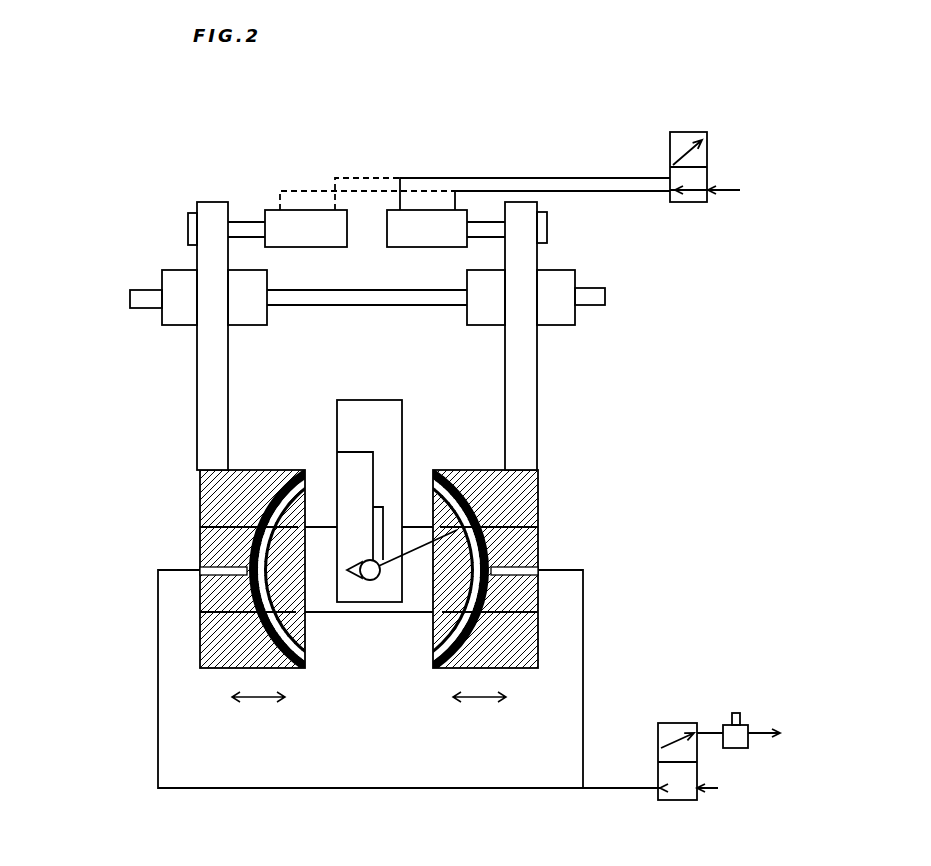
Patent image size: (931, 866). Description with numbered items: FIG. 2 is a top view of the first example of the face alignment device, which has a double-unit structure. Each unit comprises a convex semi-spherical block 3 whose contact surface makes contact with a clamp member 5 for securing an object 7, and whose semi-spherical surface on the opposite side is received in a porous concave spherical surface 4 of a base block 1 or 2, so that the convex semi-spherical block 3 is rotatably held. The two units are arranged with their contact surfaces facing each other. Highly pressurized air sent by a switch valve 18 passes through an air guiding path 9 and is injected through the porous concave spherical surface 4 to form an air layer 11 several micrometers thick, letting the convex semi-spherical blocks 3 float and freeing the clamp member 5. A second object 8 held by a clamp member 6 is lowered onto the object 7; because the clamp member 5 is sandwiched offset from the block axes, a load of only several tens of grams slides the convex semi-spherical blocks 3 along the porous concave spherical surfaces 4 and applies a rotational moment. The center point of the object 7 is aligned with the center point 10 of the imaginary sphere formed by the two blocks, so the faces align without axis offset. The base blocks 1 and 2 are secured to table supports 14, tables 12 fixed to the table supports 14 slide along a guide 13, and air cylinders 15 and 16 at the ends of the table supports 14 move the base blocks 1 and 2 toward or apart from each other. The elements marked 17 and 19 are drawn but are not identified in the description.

The base frame 1 is at (217, 672).
The holder block 2 is at (505, 670).
The lower clamp member 3 is at (200, 610).
The upper clamp member 4 is at (200, 523).
The central support pedestal 5 is at (337, 633).
The plunger 6 is at (337, 478).
The ball 7 is at (373, 582).
The conical seat 8 is at (366, 582).
The slot 9 is at (200, 568).
The spherical bearing surface 10 is at (493, 468).
The arcuate liner 11 is at (267, 472).
The lower shaft bearing 12 is at (163, 325).
The shaft end 13 is at (132, 307).
The vertical column 14 is at (197, 343).
The left upper bearing cap 15 is at (188, 235).
The right upper bearing cap 16 is at (547, 228).
The control valve 17 is at (697, 202).
The supply valve 18 is at (676, 723).
The pressure regulator 19 is at (736, 713).